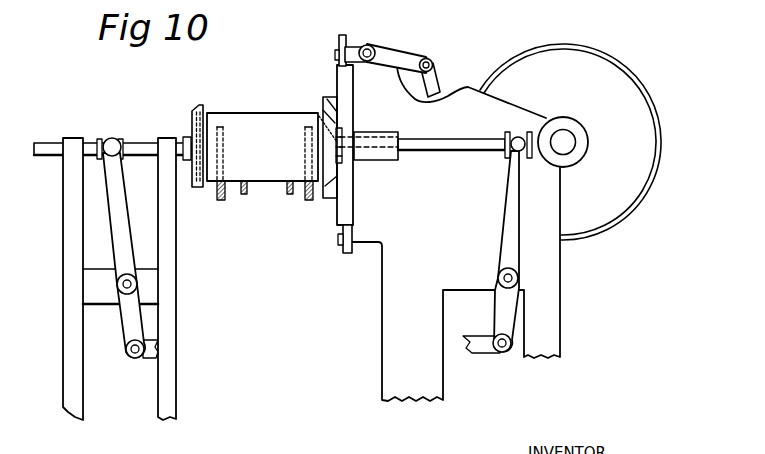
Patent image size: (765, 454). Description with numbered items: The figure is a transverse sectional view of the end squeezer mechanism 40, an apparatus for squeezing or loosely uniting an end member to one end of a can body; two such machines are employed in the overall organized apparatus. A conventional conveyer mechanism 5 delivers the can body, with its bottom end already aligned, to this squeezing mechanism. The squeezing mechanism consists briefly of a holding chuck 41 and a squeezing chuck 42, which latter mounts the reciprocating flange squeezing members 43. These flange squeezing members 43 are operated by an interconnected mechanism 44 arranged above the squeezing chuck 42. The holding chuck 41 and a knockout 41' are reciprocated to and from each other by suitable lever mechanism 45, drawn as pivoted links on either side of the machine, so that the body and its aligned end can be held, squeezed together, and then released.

The conveyer mechanism 5 is at (309, 200).
The end squeezer mechanism 40 is at (550, 288).
The holding chuck 41 is at (186, 129).
The knockout 41' is at (310, 141).
The squeezing chuck 42 is at (331, 97).
The flange squeezing members 43 is at (346, 41).
The interconnected mechanism 44 is at (387, 57).
The lever mechanism 45 is at (124, 221).